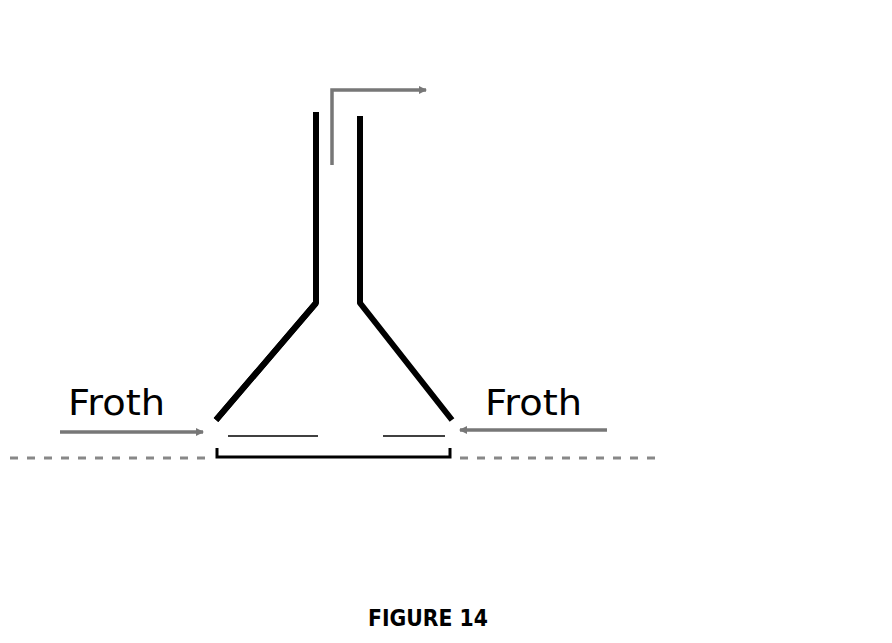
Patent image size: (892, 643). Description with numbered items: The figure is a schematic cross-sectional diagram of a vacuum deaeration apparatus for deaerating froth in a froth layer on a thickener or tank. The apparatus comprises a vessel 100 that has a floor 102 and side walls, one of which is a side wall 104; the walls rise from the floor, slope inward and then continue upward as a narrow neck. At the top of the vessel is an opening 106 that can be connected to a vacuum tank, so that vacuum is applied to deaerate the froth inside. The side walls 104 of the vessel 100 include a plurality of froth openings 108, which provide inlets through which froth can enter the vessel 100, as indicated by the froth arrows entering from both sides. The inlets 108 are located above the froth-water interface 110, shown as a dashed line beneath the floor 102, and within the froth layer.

The vessel 100 is at (418, 325).
The floor 102 is at (300, 470).
The side wall 104 is at (238, 384).
The opening 106 is at (326, 110).
The froth openings 108 is at (336, 433).
The froth-water interface 110 is at (648, 456).